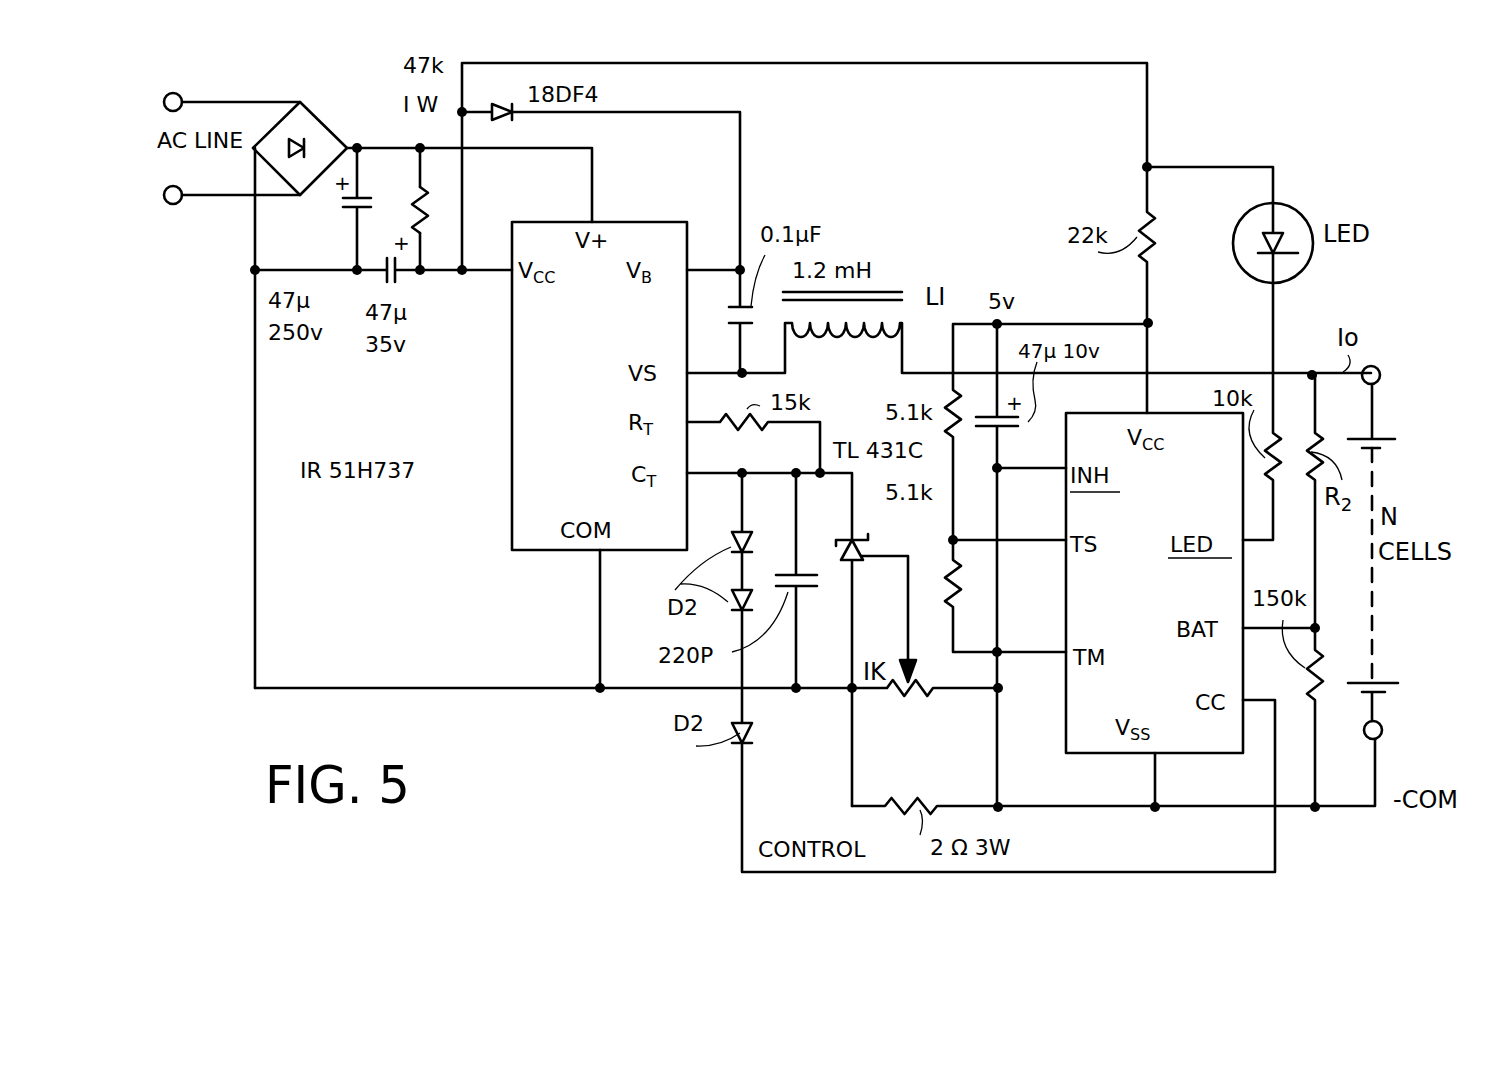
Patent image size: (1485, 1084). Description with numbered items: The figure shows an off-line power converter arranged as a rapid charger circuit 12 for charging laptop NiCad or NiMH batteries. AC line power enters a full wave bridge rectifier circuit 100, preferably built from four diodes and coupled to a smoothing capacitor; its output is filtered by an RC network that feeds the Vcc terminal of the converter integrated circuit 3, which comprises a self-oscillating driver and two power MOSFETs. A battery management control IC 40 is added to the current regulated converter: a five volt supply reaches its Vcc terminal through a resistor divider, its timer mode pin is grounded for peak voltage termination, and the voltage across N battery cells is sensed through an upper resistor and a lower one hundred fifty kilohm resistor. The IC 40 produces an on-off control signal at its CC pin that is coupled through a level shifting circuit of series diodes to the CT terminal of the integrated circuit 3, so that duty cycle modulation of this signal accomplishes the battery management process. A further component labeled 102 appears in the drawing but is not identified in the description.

The full wave bridge rectifier circuit 100 is at (346, 76).
The integrated circuit 3 is at (512, 370).
The rapid charger circuit 12 is at (1160, 131).
The battery management control IC 40 is at (1183, 412).
The TL431C voltage reference 102 is at (874, 467).